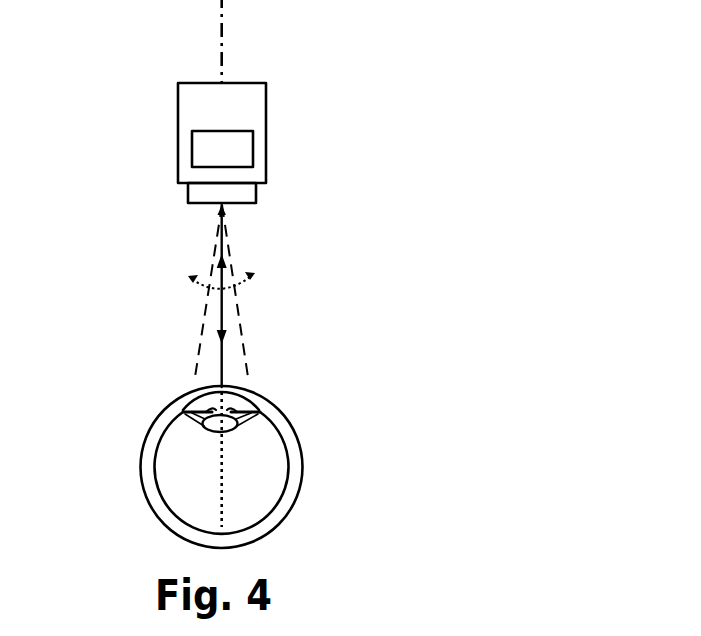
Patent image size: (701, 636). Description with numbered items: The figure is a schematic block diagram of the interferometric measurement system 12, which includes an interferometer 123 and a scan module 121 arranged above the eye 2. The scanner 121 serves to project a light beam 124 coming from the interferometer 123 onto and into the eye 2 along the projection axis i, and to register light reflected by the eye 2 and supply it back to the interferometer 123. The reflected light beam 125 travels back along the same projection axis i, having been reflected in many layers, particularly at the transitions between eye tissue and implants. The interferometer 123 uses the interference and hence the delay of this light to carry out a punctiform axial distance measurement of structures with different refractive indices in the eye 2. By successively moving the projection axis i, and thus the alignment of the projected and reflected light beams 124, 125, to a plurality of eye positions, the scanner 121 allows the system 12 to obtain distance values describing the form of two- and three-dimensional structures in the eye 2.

The projection axis i is at (224, 43).
The interferometric measurement system 12 is at (256, 111).
The interferometer 123 is at (203, 150).
The scan module 121 is at (245, 193).
The light beam 124 is at (218, 322).
The reflected light beam 125 is at (223, 275).
The eye 2 is at (128, 506).